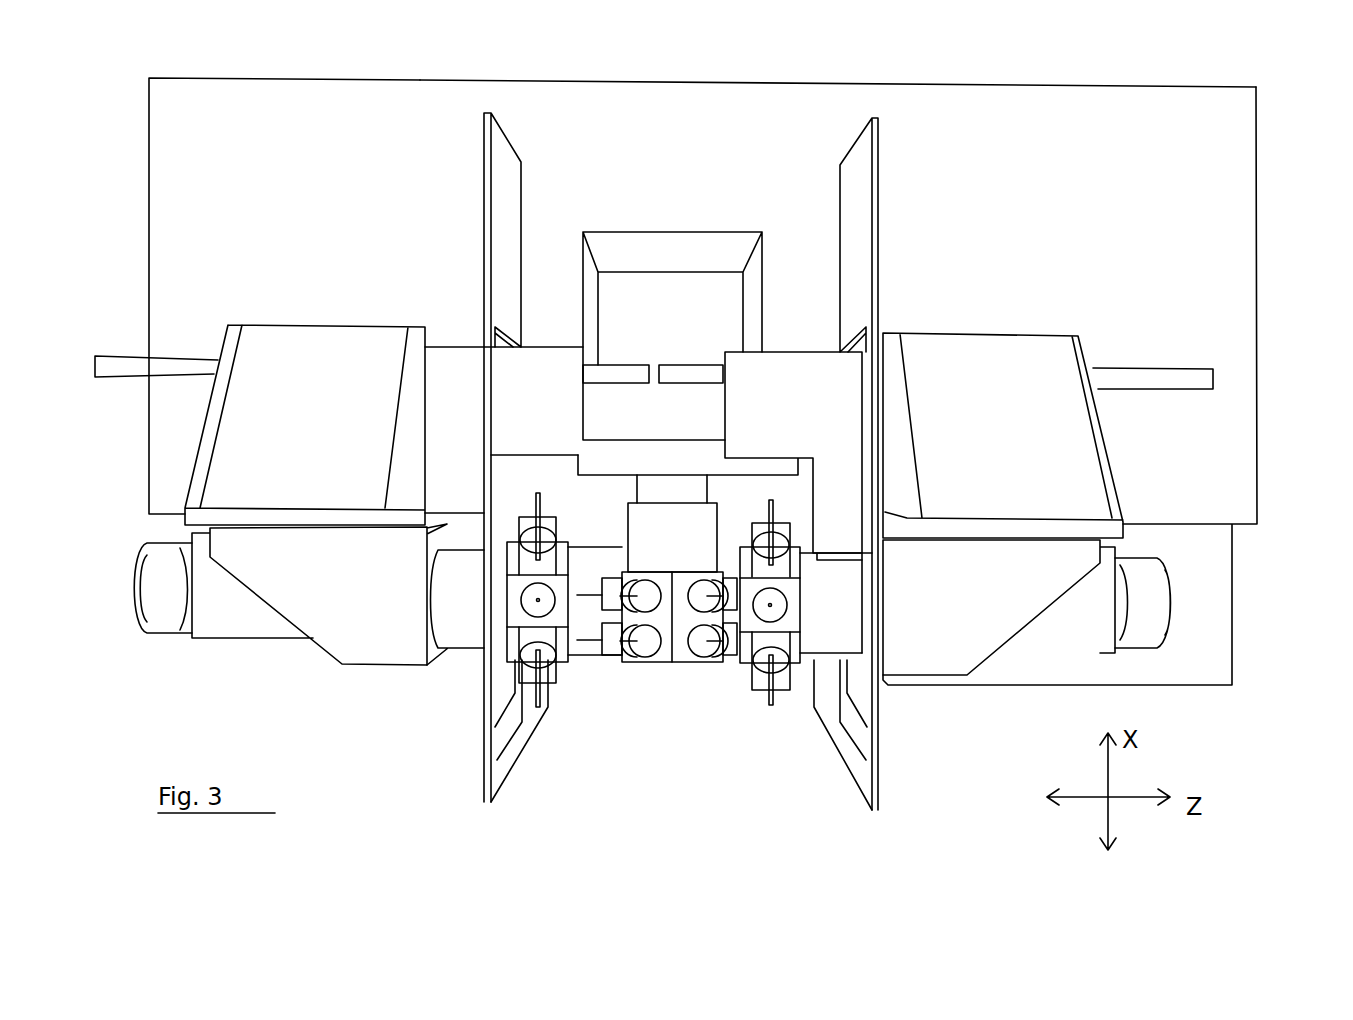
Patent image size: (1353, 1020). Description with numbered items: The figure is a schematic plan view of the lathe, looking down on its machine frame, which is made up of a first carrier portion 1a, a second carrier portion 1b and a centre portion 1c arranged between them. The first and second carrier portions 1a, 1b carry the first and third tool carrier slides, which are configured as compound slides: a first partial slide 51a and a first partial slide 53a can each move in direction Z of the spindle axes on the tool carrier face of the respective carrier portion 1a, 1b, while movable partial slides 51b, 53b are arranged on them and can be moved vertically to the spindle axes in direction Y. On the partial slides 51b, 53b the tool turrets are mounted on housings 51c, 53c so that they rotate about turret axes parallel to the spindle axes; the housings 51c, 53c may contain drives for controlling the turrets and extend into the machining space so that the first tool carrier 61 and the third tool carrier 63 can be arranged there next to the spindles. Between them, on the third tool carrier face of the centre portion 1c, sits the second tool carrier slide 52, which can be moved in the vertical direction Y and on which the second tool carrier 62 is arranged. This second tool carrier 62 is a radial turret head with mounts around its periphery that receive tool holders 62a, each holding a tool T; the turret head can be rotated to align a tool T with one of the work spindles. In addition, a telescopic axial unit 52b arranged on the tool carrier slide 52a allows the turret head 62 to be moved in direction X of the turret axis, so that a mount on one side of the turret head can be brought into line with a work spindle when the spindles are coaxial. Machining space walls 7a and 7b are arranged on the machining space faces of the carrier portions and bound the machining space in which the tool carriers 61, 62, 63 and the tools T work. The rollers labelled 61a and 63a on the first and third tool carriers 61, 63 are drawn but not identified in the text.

The first carrier portion 1a is at (298, 113).
The second carrier portion 1b is at (1237, 268).
The centre portion 1c is at (683, 103).
The second tool carrier slide 52 is at (665, 163).
The tool carrier slide 52a is at (612, 450).
The telescopic axial unit 52b is at (677, 523).
The machining space wall 7a is at (503, 228).
The machining space wall 7b is at (857, 240).
The first partial slide 51a is at (208, 442).
The second partial slide 51b is at (365, 642).
The housing 51c is at (468, 628).
The first partial slide 53a is at (1107, 453).
The second partial slide 53b is at (943, 647).
The housing 53c is at (832, 638).
The first tool carrier 61 is at (518, 618).
The rollers of first drive 61a is at (548, 663).
The second tool carrier 62 is at (675, 655).
The tool holder 62a is at (640, 650).
The third tool carrier 63 is at (813, 653).
The rollers of third drive 63a is at (760, 665).
The tool T is at (618, 647).